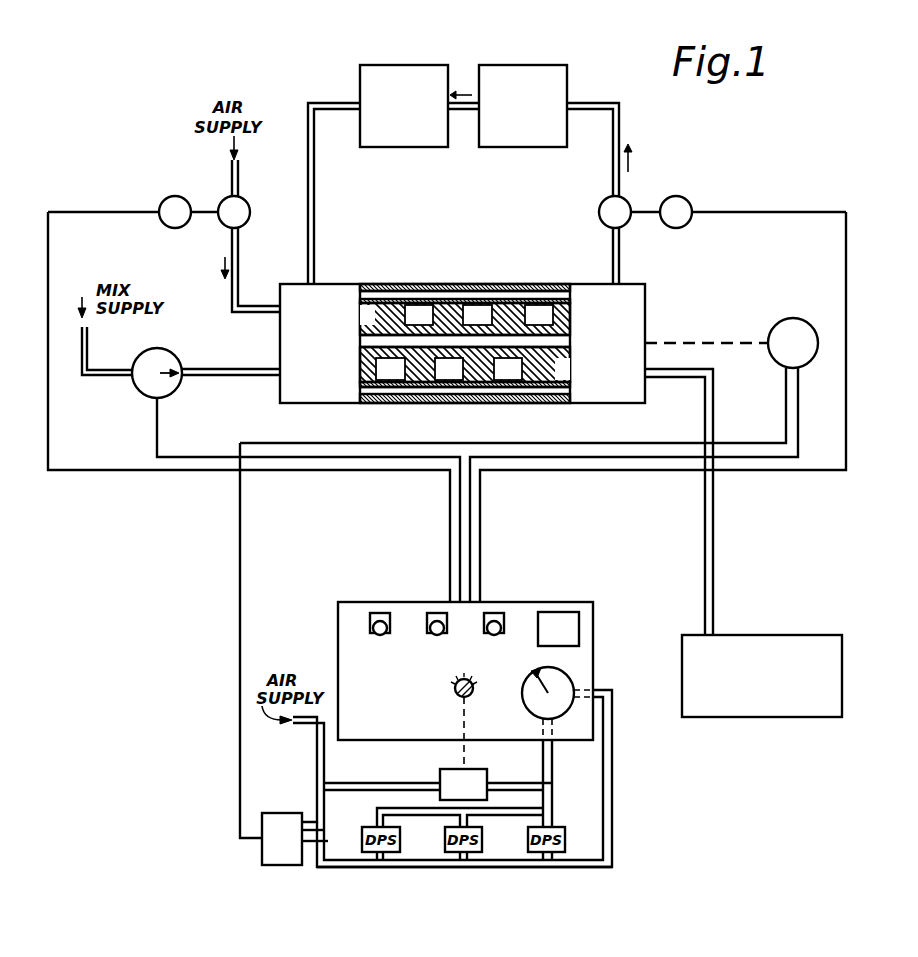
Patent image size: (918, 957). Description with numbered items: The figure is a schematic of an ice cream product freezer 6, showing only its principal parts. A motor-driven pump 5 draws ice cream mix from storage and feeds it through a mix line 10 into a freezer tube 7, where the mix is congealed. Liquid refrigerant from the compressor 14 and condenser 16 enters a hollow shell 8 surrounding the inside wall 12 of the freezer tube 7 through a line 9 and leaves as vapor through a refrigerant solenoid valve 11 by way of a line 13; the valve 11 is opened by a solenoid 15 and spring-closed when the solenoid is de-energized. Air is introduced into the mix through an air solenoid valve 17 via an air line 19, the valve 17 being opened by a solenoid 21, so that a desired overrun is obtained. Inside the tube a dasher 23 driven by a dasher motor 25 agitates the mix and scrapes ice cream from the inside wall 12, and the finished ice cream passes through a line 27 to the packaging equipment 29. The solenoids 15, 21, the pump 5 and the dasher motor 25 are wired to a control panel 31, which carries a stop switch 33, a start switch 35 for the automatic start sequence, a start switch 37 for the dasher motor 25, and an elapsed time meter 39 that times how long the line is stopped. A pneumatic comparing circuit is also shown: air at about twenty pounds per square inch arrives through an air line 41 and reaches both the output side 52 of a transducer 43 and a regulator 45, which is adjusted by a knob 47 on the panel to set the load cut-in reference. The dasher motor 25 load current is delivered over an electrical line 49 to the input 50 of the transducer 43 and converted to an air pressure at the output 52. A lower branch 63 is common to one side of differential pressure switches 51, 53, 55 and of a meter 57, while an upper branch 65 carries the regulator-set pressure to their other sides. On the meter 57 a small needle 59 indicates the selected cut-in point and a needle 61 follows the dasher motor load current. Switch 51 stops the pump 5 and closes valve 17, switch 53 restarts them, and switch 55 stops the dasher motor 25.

The pump 5 is at (172, 348).
The freezer 6 is at (327, 65).
The freezer tube 7 is at (462, 317).
The hollow shell 8 is at (428, 296).
The line 9 is at (308, 186).
The mix line 10 is at (230, 380).
The refrigerant solenoid valve 11 is at (600, 204).
The inside wall 12 is at (456, 300).
The line 13 is at (612, 252).
The compressor 14 is at (520, 72).
The solenoid 15 is at (688, 198).
The condenser 16 is at (403, 72).
The air solenoid valve 17 is at (250, 212).
The air line 19 is at (255, 302).
The solenoid 21 is at (170, 196).
The dasher 23 is at (563, 318).
The dasher motor 25 is at (780, 320).
The line 27 is at (714, 540).
The packaging equipment 29 is at (762, 635).
The control panel 31 is at (532, 602).
The stop switch 33 is at (494, 622).
The start switch 35 is at (434, 622).
The start switch 37 is at (376, 622).
The elapsed time meter 39 is at (580, 628).
The air line 41 is at (317, 748).
The transducer 43 is at (289, 800).
The regulator 45 is at (440, 770).
The knob 47 is at (455, 690).
The electrical line 49 is at (238, 612).
The input 50 is at (262, 856).
The differential pressure switch 51 is at (362, 830).
The output side 52 is at (329, 844).
The differential pressure switch 53 is at (445, 832).
The differential pressure switch 55 is at (528, 832).
The meter 57 is at (522, 693).
The needle 59 is at (538, 670).
The needle 61 is at (548, 684).
The lower branch 63 is at (340, 870).
The upper branch 65 is at (380, 782).